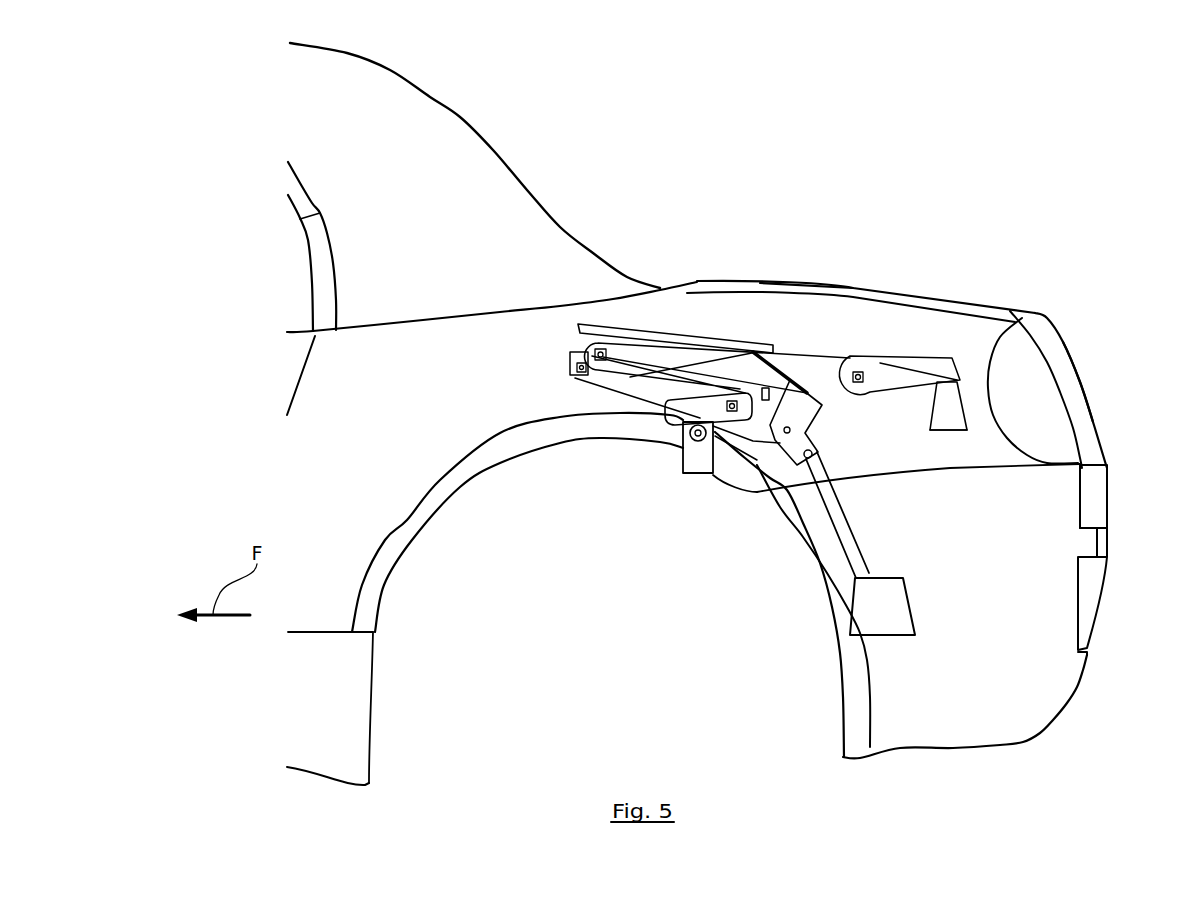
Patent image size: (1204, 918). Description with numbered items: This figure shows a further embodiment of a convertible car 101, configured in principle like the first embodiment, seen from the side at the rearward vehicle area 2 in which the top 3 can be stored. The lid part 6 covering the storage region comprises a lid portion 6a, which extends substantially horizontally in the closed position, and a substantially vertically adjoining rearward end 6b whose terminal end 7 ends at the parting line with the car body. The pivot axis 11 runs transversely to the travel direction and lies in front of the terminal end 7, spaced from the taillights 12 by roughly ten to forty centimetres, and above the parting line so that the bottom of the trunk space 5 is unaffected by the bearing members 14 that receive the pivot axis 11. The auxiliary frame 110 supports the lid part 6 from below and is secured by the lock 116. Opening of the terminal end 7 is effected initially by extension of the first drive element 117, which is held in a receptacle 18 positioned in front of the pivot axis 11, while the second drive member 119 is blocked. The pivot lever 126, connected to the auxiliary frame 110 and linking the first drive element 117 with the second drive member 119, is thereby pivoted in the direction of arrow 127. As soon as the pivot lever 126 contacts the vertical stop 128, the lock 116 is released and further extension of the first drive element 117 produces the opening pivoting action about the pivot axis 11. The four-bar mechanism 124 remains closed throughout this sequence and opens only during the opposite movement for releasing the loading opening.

The rearward vehicle area 2 is at (1036, 181).
The top 3 is at (455, 143).
The trunk space 5 is at (976, 416).
The lid part 6 is at (970, 290).
The lid portion 6a is at (849, 280).
The rearward end 6b is at (1086, 364).
The terminal end 7 is at (1114, 495).
The pivot axis 11 is at (953, 388).
The taillights 12 is at (1047, 415).
The bearing members 14 is at (957, 420).
The receptacle 18 is at (876, 624).
The car 101 is at (710, 108).
The auxiliary frame 110 is at (890, 380).
The lock 116 is at (712, 473).
The first drive element 117 is at (838, 513).
The second drive member 119 is at (806, 390).
The four-bar mechanism 124 is at (604, 402).
The pivot lever 126 is at (775, 483).
The arrow 127 is at (823, 415).
The vertical stop 128 is at (736, 388).